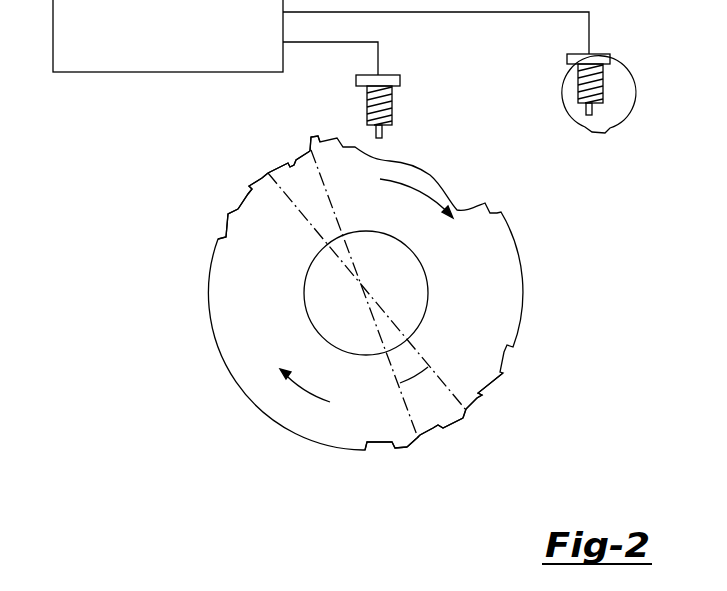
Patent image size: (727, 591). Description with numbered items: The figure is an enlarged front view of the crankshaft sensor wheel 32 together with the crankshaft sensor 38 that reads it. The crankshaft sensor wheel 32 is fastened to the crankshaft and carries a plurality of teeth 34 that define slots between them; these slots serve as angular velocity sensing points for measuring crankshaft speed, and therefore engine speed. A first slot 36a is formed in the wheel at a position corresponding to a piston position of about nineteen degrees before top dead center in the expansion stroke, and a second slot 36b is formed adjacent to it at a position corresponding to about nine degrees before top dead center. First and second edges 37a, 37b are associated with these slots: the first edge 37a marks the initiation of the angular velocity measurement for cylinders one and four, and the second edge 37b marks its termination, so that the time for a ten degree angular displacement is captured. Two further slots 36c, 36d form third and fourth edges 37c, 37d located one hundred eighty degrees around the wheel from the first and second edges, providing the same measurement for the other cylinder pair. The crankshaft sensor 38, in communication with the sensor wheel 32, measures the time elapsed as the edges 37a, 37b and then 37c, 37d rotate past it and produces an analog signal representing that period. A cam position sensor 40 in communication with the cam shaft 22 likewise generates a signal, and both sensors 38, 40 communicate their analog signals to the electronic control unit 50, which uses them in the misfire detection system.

The electronic control unit 50 is at (146, 72).
The crankshaft sensor 38 is at (393, 104).
The cam position sensor 40 is at (603, 82).
The cam shaft 22 is at (617, 171).
The crankshaft sensor wheel 32 is at (280, 412).
The teeth 34 is at (235, 210).
The first slot 36a is at (296, 159).
The second slot 36b is at (250, 186).
The third slot 36c is at (436, 428).
The fourth slot 36d is at (484, 395).
The first edge 37a is at (315, 137).
The second edge 37b is at (262, 172).
The third edge 37c is at (420, 440).
The fourth edge 37d is at (467, 416).